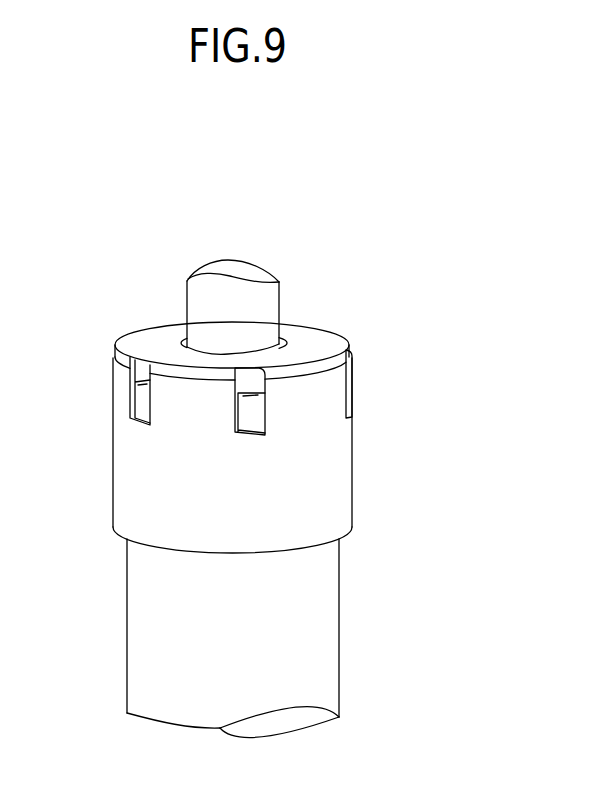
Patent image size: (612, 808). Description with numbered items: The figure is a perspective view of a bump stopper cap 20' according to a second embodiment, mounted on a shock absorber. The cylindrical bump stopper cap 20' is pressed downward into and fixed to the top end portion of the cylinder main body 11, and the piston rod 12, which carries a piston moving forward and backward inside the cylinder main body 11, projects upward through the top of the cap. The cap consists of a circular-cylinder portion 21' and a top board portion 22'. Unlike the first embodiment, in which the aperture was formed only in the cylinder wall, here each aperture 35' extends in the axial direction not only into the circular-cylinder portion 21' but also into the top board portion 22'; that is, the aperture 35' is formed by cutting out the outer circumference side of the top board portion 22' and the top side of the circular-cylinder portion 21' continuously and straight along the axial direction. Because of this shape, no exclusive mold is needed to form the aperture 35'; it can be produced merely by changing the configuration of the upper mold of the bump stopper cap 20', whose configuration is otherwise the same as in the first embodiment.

The cylinder main body 11 is at (339, 617).
The piston rod 12 is at (280, 298).
The bump stopper cap 20' is at (243, 406).
The circular-cylinder portion 21' is at (266, 455).
The top board portion 22' is at (205, 340).
The aperture 35' is at (230, 357).